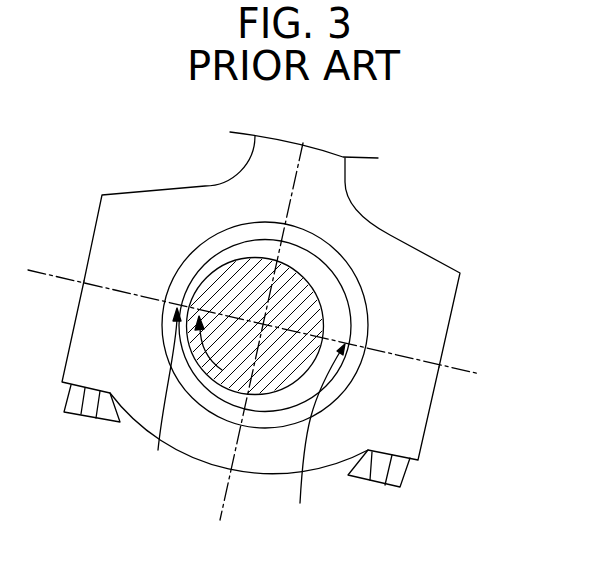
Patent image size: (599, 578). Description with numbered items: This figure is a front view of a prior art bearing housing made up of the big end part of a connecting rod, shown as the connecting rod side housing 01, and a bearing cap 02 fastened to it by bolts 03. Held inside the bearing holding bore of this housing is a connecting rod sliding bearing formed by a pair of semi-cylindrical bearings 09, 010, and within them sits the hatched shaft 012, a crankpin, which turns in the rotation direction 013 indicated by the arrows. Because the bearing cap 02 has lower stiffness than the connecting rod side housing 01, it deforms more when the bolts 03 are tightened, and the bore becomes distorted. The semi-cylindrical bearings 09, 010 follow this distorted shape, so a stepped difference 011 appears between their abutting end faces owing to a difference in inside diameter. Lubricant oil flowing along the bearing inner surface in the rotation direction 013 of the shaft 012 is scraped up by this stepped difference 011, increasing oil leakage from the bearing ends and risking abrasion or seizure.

The connecting rod side housing 01 is at (437, 303).
The bearing cap 02 is at (415, 417).
The bolts 03 is at (93, 408).
The semi-cylindrical bearing 09 is at (340, 271).
The semi-cylindrical bearing 010 is at (267, 418).
The stepped difference 011 is at (242, 416).
The shaft 012 is at (231, 283).
The rotation direction 013 is at (206, 355).